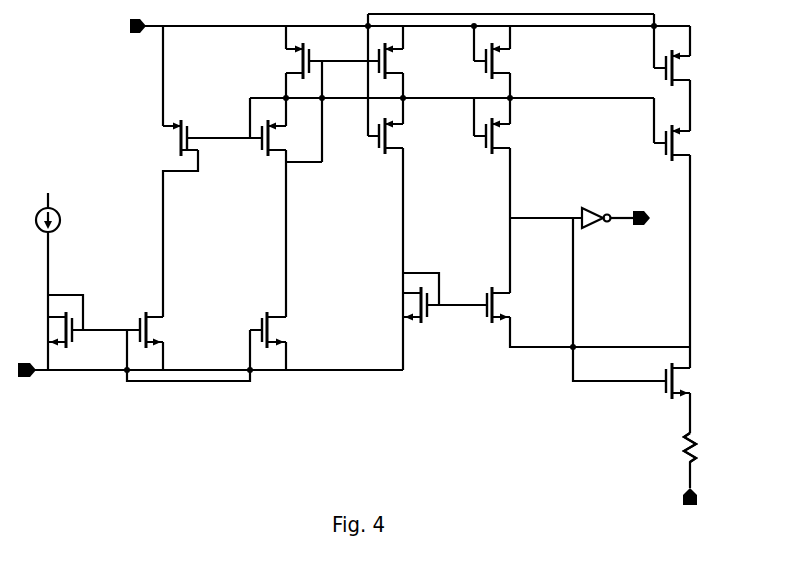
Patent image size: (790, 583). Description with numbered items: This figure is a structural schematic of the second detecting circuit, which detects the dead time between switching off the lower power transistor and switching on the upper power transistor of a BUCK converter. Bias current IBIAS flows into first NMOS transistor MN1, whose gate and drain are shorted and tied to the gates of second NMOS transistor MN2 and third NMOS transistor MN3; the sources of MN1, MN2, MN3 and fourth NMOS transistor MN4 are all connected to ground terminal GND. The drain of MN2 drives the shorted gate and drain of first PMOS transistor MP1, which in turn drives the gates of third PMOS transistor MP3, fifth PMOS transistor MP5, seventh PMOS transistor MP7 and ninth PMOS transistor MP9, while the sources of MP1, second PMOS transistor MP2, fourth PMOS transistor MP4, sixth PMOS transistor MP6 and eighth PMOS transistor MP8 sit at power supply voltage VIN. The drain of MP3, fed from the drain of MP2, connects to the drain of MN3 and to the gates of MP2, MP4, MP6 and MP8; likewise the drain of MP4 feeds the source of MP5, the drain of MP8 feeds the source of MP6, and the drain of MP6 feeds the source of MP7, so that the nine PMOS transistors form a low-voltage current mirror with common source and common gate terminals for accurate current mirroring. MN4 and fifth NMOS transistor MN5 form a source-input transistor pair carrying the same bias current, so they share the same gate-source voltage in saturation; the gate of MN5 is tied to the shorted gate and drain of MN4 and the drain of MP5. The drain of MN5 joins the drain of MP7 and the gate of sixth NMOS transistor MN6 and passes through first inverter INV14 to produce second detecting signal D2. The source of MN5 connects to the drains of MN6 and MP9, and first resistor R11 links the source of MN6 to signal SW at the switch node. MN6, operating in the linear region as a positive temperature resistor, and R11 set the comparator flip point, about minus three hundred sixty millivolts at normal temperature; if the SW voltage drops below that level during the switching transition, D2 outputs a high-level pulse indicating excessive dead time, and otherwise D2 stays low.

The first PMOS transistor MP1 is at (165, 138).
The second PMOS transistor MP2 is at (278, 61).
The third PMOS transistor MP3 is at (287, 138).
The fourth PMOS transistor MP4 is at (409, 61).
The fifth PMOS transistor MP5 is at (401, 136).
The sixth PMOS transistor MP6 is at (508, 61).
The seventh PMOS transistor MP7 is at (508, 136).
The eighth PMOS transistor MP8 is at (688, 68).
The ninth PMOS transistor MP9 is at (688, 143).
The first NMOS transistor MN1 is at (38, 330).
The second NMOS transistor MN2 is at (174, 330).
The third NMOS transistor MN3 is at (284, 330).
The fourth NMOS transistor MN4 is at (389, 305).
The fifth NMOS transistor MN5 is at (516, 305).
The sixth NMOS transistor MN6 is at (693, 381).
The first inverter INV14 is at (587, 210).
The first resistor R11 is at (704, 447).
The power supply voltage VIN is at (114, 30).
The ground terminal GND is at (25, 387).
The bias current IBIAS is at (78, 212).
The second detecting signal D2 is at (655, 221).
The signal SW at the switch node SW is at (672, 497).